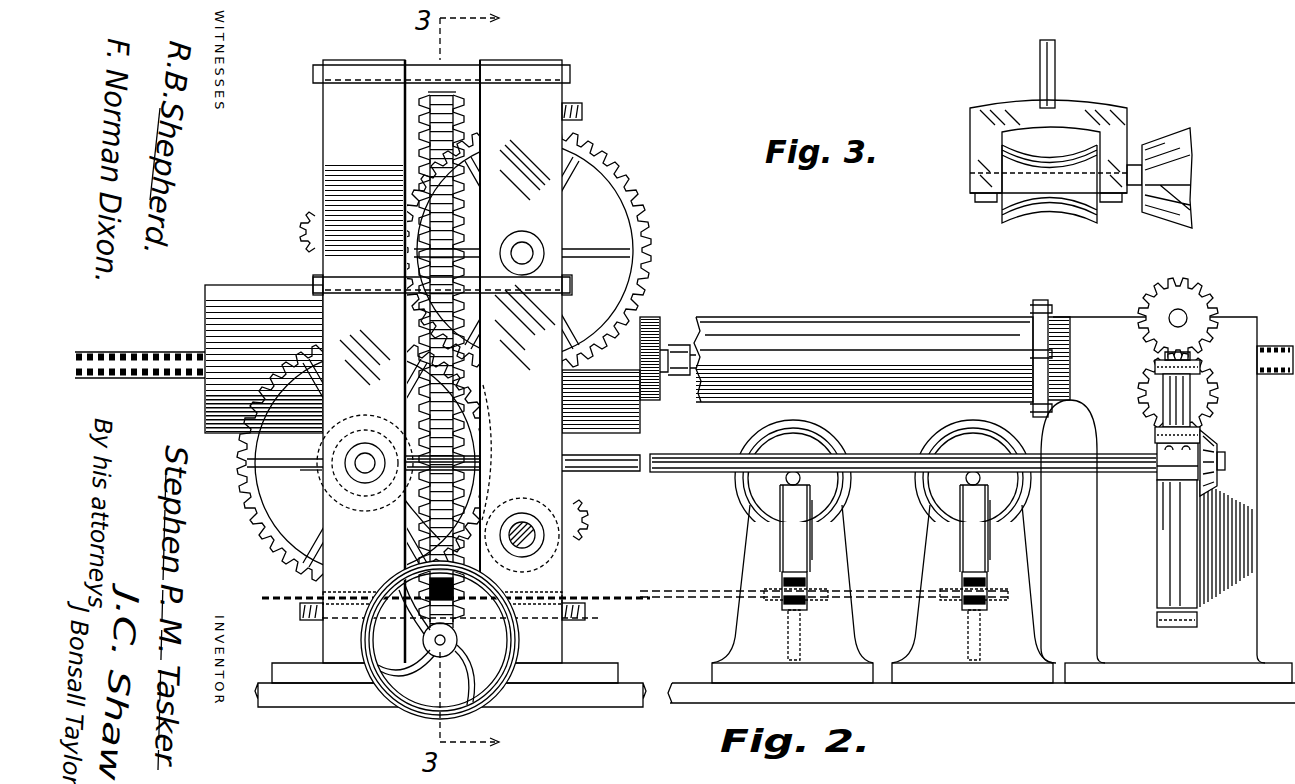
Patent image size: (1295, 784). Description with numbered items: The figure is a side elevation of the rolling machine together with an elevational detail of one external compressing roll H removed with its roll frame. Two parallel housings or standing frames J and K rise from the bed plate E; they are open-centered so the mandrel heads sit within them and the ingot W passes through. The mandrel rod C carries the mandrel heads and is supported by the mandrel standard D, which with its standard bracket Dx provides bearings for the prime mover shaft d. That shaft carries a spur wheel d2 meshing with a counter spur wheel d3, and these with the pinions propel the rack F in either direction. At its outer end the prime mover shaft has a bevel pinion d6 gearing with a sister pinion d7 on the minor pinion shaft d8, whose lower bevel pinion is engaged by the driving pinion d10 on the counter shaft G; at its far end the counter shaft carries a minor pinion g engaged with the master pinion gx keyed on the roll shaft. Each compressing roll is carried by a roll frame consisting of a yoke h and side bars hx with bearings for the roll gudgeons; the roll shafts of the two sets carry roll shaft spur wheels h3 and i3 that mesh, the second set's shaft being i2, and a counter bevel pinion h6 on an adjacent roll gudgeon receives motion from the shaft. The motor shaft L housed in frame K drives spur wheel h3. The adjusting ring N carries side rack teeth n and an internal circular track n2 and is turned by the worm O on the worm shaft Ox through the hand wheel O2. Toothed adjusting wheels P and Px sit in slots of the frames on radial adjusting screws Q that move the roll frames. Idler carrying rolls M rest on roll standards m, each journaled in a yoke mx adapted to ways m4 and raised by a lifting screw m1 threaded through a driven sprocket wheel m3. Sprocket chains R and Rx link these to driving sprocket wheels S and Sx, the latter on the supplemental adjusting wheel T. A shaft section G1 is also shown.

In FIG. 2, the housing or standing frame J is at (364, 361).
In FIG. 2, the housing or standing frame K is at (521, 361).
In FIG. 2, the adjusting ring N is at (458, 108).
In FIG. 2, the rack teeth n is at (466, 440).
In FIG. 2, the internal circular track n2 is at (441, 86).
In FIG. 2, the roll shaft spur wheel i3 is at (640, 205).
In FIG. 2, the roll shaft i2 is at (524, 250).
In FIG. 2, the toothed adjusting wheel P is at (303, 620).
In FIG. 2, the ingot W is at (264, 359).
In FIG. 2, the roll frame h is at (366, 455).
In FIG. 2, the side bars hx is at (365, 449).
In FIG. 2, the roll shaft spur wheel h3 is at (353, 463).
In FIG. 2, the minor pinion g is at (405, 512).
In FIG. 2, the master pinion gx is at (316, 480).
In FIG. 2, the sprocket chain R is at (265, 600).
In FIG. 2, the driving sprocket wheel S is at (344, 597).
In FIG. 2, the driving sprocket wheel Sx is at (545, 596).
In FIG. 2, the toothed adjusting wheel Px is at (588, 503).
In FIG. 2, the motor shaft L is at (535, 537).
In FIG. 2, the supplemental adjusting wheel T is at (583, 615).
In FIG. 2, the worm O is at (458, 640).
In FIG. 2, the worm shaft Ox is at (438, 647).
In FIG. 2, the hand wheel O2 is at (368, 668).
In FIG. 2, the mandrel rod C is at (883, 358).
In FIG. 2, the rack F is at (692, 385).
In FIG. 2, the idler carrying rolls M is at (820, 450).
In FIG. 2, the counter shaft G is at (1218, 462).
In FIG. 2, the shaft section G1 is at (703, 472).
In FIG. 2, the roll standard m is at (882, 577).
In FIG. 2, the yoke mx is at (886, 513).
In FIG. 2, the ways m4 is at (990, 512).
In FIG. 2, the driven sprocket wheel m3 is at (960, 602).
In FIG. 2, the lifting screw m1 is at (980, 633).
In FIG. 2, the sprocket chain Rx is at (720, 594).
In FIG. 2, the bed plate E is at (1202, 673).
In FIG. 2, the mandrel standard D is at (1166, 500).
In FIG. 2, the standard bracket Dx is at (1157, 524).
In FIG. 2, the prime mover shaft d is at (1172, 322).
In FIG. 2, the counter spur wheel d3 is at (1192, 305).
In FIG. 2, the spur wheel d2 is at (1160, 433).
In FIG. 2, the bevel pinion d6 is at (1163, 400).
In FIG. 2, the sister pinion d7 is at (1155, 370).
In FIG. 2, the minor pinion shaft d8 is at (1192, 362).
In FIG. 2, the driving pinion d10 is at (1217, 442).
In FIG. 3, the external compressing roll H is at (1048, 161).
In FIG. 3, the radial adjusting screw Q is at (1057, 72).
In FIG. 3, the counter bevel pinion h6 is at (1170, 148).